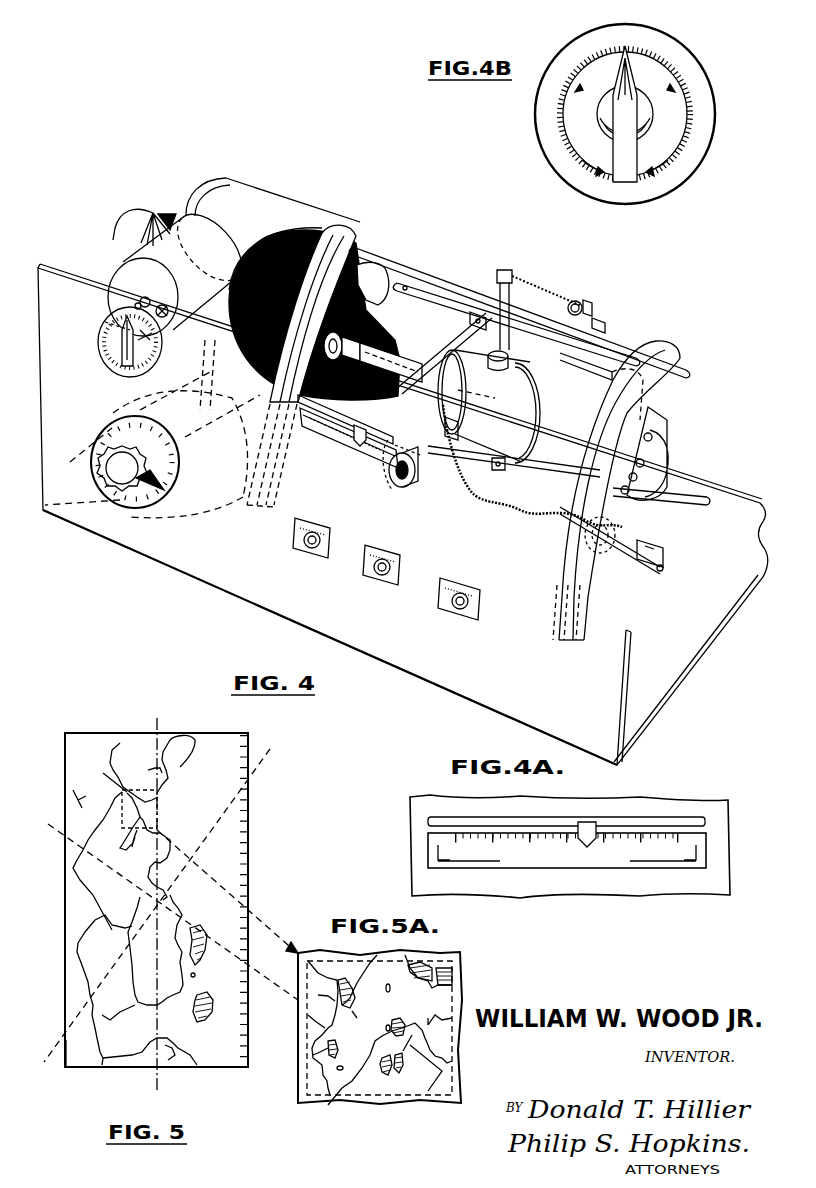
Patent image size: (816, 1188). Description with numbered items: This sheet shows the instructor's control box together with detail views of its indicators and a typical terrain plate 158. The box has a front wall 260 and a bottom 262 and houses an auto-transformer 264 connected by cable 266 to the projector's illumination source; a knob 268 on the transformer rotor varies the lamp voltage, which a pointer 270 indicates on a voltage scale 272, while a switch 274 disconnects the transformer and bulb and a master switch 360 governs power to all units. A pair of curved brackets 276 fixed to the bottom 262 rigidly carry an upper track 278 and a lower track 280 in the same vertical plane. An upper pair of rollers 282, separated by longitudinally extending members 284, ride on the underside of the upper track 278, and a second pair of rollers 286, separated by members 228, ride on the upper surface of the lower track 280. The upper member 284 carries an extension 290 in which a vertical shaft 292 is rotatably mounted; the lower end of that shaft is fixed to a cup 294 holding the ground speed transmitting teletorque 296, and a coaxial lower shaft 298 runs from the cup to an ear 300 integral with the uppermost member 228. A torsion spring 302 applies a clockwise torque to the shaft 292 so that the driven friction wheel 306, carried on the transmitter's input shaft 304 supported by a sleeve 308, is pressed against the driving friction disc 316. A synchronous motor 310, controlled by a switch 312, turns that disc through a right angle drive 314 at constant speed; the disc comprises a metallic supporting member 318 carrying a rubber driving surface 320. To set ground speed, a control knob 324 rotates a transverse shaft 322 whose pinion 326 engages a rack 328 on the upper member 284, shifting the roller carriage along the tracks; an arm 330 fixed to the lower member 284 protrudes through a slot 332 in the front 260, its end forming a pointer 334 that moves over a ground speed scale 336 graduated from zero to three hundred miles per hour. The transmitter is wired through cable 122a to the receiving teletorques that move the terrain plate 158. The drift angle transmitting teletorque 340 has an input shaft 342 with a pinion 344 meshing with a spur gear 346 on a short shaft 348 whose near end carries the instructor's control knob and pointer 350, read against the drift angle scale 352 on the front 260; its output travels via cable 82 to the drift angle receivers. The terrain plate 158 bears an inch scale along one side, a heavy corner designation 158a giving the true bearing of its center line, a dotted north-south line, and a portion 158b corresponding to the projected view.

In FIG. 4, the cable 82 is at (153, 211).
In FIG. 4, the cable 122a is at (700, 496).
In FIG. 5, the terrain plate 158 is at (225, 866).
In FIG. 5A, the terrain plate 158 is at (452, 1078).
In FIG. 5, the designation 158a is at (62, 1066).
In FIG. 5, the portion of the plate 158b is at (155, 806).
In FIG. 5A, the portion of the plate 158b is at (432, 1000).
In FIG. 4, the longitudinally extending members 228 is at (512, 512).
In FIG. 4, the front wall 260 is at (622, 670).
In FIG. 4, the bottom 262 is at (690, 648).
In FIG. 4, the auto-transformer 264 is at (208, 465).
In FIG. 4, the cable 266 is at (210, 350).
In FIG. 4, the knob 268 is at (125, 480).
In FIG. 4, the pointer 270 is at (160, 492).
In FIG. 4, the voltage scale 272 is at (165, 452).
In FIG. 4, the switch 274 is at (458, 609).
In FIG. 4, the curved brackets 276 is at (362, 235).
In FIG. 4, the upper track 278 is at (395, 264).
In FIG. 4, the lower track 280 is at (668, 558).
In FIG. 4, the upper pair of rollers 282 is at (420, 286).
In FIG. 4, the longitudinally extending members 284 is at (480, 310).
In FIG. 4, the second pair of rollers 286 is at (390, 470).
In FIG. 4, the extension 290 is at (513, 274).
In FIG. 4, the vertical shaft 292 is at (528, 286).
In FIG. 4, the cup 294 is at (510, 404).
In FIG. 4, the ground speed transmitting teletorque 296 is at (572, 390).
In FIG. 4, the lower shaft 298 is at (505, 458).
In FIG. 4, the ear 300 is at (507, 465).
In FIG. 4, the torsion spring 302 is at (527, 378).
In FIG. 4, the input shaft 304 is at (408, 370).
In FIG. 4, the driven friction wheel 306 is at (348, 336).
In FIG. 4, the sleeve 308 is at (370, 355).
In FIG. 4, the synchronous motor 310 is at (250, 188).
In FIG. 4, the switch 312 is at (306, 545).
In FIG. 4, the right angle drive 314 is at (374, 264).
In FIG. 4, the driving friction disc 316 is at (298, 230).
In FIG. 4, the metallic supporting member 318 is at (316, 236).
In FIG. 4, the rubber driving surface 320 is at (273, 236).
In FIG. 4, the shaft 322 is at (460, 428).
In FIG. 4, the control knob 324 is at (404, 488).
In FIG. 4, the pinion 326 is at (583, 306).
In FIG. 4, the rack 328 is at (586, 301).
In FIG. 4, the arm 330 is at (455, 345).
In FIG. 4, the slot 332 is at (340, 412).
In FIG. 4A, the slot 332 is at (650, 820).
In FIG. 4, the pointer 334 is at (362, 448).
In FIG. 4A, the pointer 334 is at (590, 826).
In FIG. 4, the ground speed scale 336 is at (345, 435).
In FIG. 4A, the ground speed scale 336 is at (655, 868).
In FIG. 4, the drift angle transmitting teletorque 340 is at (110, 276).
In FIG. 4, the input shaft 342 is at (145, 297).
In FIG. 4, the pinion 344 is at (104, 323).
In FIG. 4, the spur gear 346 is at (168, 308).
In FIG. 4, the short shaft 348 is at (155, 340).
In FIG. 4B, the control knob and pointer 350 is at (632, 170).
In FIG. 4, the control knob and pointer 350 is at (118, 345).
In FIG. 4B, the drift angle scale 352 is at (708, 140).
In FIG. 4, the drift angle scale 352 is at (120, 368).
In FIG. 4, the master switch 360 is at (378, 573).